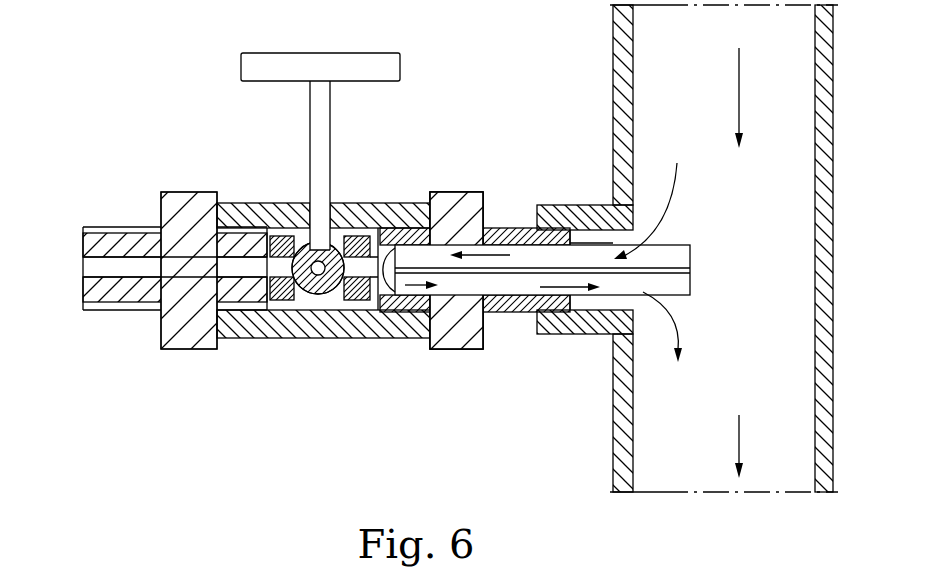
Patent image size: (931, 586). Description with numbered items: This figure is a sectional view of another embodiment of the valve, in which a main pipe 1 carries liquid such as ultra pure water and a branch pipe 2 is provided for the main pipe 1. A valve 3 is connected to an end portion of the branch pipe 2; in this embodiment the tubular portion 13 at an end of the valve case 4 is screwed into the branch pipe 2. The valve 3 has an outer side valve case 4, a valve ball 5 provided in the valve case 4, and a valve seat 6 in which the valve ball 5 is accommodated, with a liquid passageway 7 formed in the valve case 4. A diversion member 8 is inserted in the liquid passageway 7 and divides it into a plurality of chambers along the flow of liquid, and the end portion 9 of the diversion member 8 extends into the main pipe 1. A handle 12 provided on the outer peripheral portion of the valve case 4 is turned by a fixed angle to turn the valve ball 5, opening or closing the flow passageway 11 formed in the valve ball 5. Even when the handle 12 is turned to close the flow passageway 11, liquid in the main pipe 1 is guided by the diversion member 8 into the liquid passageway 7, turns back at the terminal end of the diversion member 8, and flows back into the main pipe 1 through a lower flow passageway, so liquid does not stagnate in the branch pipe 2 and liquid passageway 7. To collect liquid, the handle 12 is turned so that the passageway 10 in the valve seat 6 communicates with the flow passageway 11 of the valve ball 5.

The main pipe 1 is at (613, 60).
The branch pipe 2 is at (568, 325).
The valve 3 is at (322, 346).
The valve case 4 is at (190, 200).
The valve ball 5 is at (298, 296).
The valve seat 6 is at (283, 205).
The liquid passageway 7 is at (405, 205).
The diversion member 8 is at (523, 255).
The end portion 9 is at (690, 257).
The passageway 10 is at (362, 305).
The flow passageway 11 is at (348, 215).
The handle 12 is at (342, 62).
The tubular portion 13 is at (548, 252).